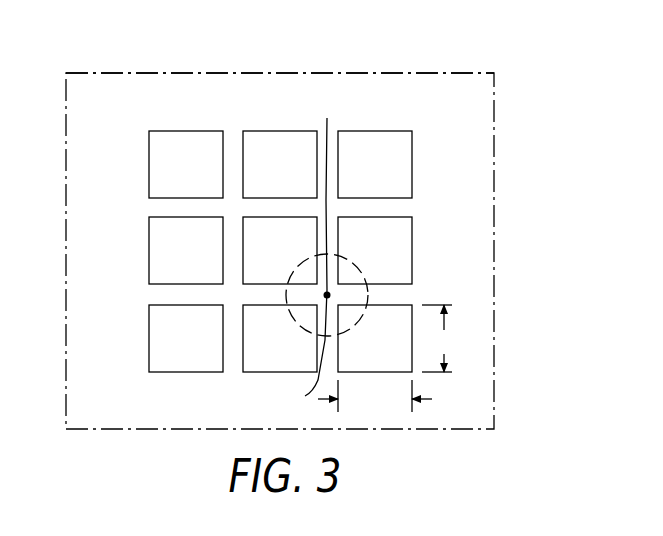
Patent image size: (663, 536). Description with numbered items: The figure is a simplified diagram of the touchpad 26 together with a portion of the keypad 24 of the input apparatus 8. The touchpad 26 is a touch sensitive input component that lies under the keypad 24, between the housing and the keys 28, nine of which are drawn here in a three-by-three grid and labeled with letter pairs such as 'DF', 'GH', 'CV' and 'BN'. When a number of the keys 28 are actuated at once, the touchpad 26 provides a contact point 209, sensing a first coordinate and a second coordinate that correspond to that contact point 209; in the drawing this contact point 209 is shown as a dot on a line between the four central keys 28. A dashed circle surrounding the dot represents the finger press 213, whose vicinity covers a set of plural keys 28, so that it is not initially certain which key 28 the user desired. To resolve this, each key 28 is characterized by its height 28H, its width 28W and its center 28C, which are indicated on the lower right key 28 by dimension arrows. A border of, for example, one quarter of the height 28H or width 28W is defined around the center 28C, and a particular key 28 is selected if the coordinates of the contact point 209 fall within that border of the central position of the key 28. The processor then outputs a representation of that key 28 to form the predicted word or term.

The input apparatus 8 is at (150, 55).
The touchpad 26 is at (472, 72).
The keypad 24 is at (120, 287).
The keys 28 is at (148, 154).
The contact point 209 is at (329, 256).
The finger press 213 is at (380, 279).
The height 28H is at (442, 338).
The width 28W is at (375, 396).
The center 28C is at (378, 346).